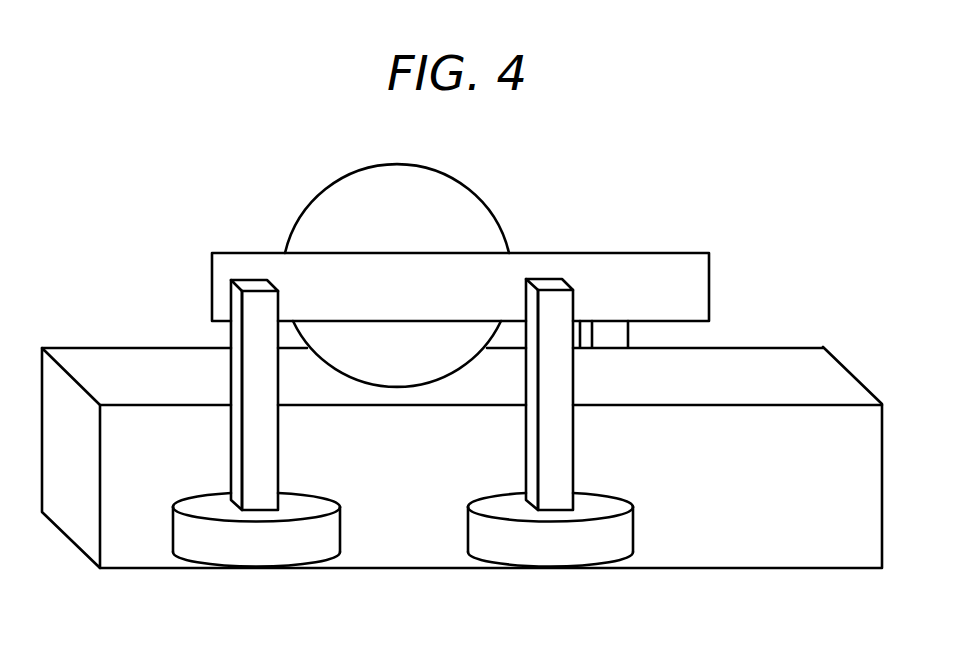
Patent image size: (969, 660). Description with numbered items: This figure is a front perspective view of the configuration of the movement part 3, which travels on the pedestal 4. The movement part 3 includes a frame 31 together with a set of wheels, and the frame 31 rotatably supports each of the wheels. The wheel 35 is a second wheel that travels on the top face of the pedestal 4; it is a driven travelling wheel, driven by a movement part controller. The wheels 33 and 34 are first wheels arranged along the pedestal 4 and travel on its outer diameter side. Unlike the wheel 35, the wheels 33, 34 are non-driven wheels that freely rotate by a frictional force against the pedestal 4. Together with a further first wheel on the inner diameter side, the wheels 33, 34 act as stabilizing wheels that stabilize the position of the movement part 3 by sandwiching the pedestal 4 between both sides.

The movement part 3 is at (639, 170).
The frame 31 is at (681, 265).
The wheel 33 is at (283, 552).
The wheel 34 is at (588, 552).
The wheel 35 is at (468, 208).
The pedestal 4 is at (825, 553).